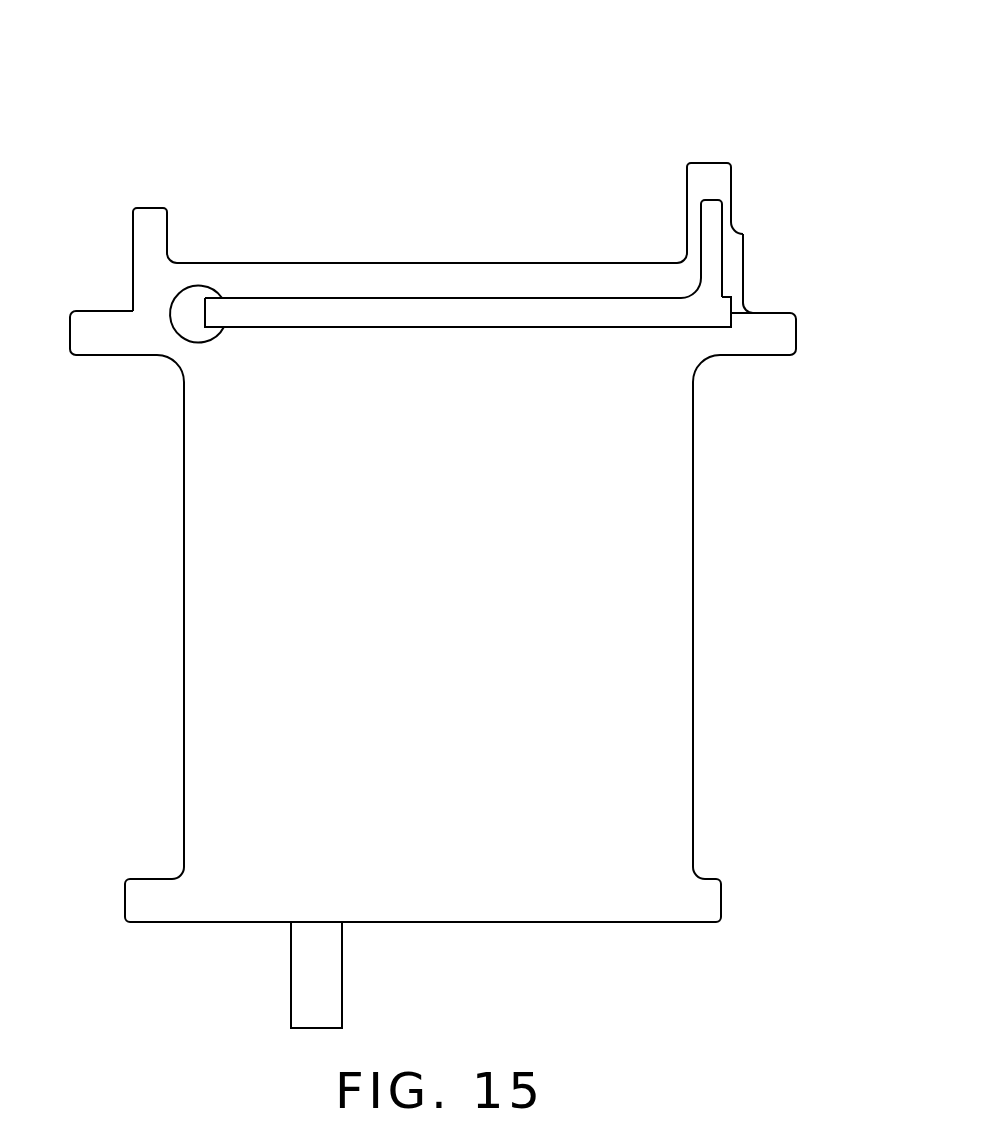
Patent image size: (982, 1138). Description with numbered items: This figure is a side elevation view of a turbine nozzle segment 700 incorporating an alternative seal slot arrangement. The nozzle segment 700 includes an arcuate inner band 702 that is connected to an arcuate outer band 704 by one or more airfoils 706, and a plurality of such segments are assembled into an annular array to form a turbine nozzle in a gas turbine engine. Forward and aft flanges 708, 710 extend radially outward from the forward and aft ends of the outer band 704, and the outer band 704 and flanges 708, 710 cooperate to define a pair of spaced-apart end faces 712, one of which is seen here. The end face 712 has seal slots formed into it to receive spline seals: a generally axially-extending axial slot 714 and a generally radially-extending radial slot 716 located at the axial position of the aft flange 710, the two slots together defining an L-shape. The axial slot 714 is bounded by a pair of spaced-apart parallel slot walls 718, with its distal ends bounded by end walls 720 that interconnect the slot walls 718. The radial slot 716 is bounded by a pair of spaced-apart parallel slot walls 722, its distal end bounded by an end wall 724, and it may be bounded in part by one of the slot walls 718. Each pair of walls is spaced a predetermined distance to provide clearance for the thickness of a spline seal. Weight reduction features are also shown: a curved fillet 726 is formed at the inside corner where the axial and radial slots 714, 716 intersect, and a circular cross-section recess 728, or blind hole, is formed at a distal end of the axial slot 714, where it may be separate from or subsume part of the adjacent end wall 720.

The nozzle segment 700 is at (488, 90).
The inner band 702 is at (580, 898).
The outer band 704 is at (757, 345).
The airfoils 706 is at (455, 575).
The forward flange 708 is at (151, 208).
The aft flange 710 is at (708, 170).
The end face 712 is at (115, 345).
The axial slot 714 is at (323, 313).
The radial slot 716 is at (718, 250).
The slot walls 718 is at (395, 298).
The end walls 720 is at (737, 317).
The slot walls 722 is at (693, 223).
The end walls 724 is at (713, 198).
The curved fillet 726 is at (687, 285).
The recess 728 is at (170, 300).